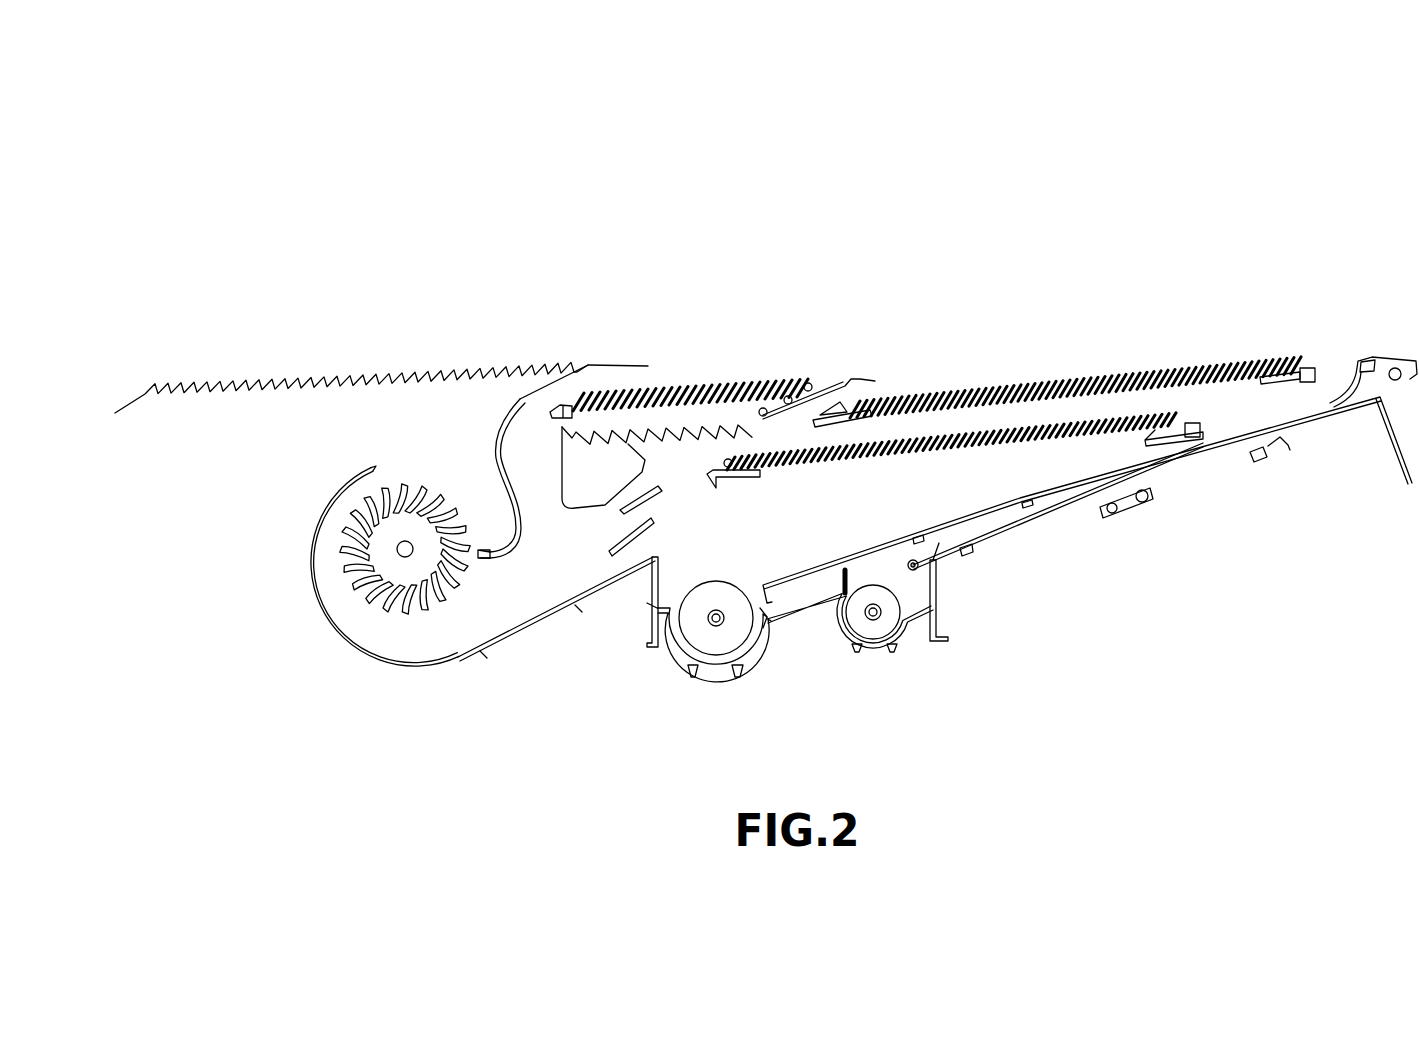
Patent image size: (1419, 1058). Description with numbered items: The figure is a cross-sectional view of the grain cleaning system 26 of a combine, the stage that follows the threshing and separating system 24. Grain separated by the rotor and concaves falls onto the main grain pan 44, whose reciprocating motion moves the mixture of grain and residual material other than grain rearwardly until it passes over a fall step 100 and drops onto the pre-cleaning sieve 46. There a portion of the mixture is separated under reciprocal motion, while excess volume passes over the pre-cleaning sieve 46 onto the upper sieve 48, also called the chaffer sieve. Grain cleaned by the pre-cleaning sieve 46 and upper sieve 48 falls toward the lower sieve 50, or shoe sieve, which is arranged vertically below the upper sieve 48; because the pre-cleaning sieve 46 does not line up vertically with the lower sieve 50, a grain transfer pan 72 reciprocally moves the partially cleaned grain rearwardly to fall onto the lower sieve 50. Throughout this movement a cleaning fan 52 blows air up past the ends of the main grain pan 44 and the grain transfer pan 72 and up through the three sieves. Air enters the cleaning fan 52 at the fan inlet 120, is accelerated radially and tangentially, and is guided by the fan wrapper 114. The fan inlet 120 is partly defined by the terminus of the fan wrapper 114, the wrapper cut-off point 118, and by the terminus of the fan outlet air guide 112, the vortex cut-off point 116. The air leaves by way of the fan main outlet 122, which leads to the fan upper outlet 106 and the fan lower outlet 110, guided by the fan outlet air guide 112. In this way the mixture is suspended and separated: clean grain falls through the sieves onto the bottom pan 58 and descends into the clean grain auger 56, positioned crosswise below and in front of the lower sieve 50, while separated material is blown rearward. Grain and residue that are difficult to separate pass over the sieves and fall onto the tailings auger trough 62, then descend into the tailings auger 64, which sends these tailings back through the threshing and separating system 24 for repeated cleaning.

The threshing and separating system 24 is at (768, 155).
The grain cleaning system 26 is at (849, 235).
The main grain pan 44 is at (182, 389).
The pre-cleaning sieve 46 is at (757, 380).
The upper sieve 48 is at (1082, 380).
The lower sieve 50 is at (957, 438).
The cleaning fan 52 is at (365, 603).
The clean grain auger 56 is at (720, 657).
The bottom pan 58 is at (985, 513).
The tailings auger trough 62 is at (1035, 522).
The tailings auger 64 is at (873, 638).
The grain transfer pan 72 is at (642, 455).
The fall step 100 is at (652, 380).
The fan upper outlet 106 is at (530, 487).
The fan lower outlet 110 is at (590, 540).
The fan outlet air guide 112 is at (503, 497).
The fan wrapper 114 is at (328, 605).
The vortex cut-off point 116 is at (487, 563).
The wrapper cut-off point 118 is at (367, 470).
The fan inlet 120 is at (397, 470).
The fan main outlet 122 is at (500, 585).